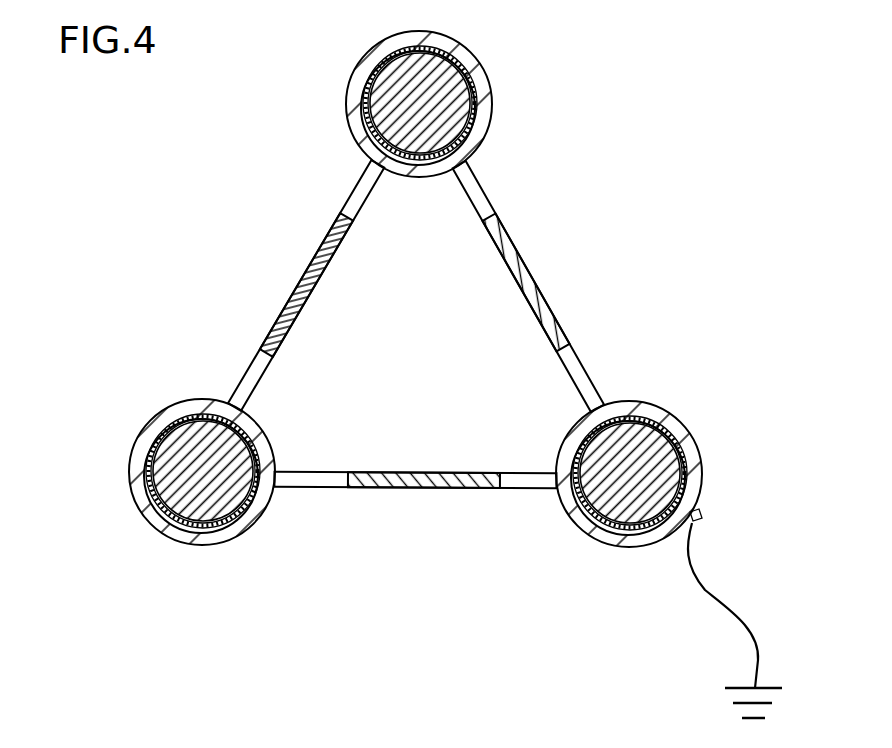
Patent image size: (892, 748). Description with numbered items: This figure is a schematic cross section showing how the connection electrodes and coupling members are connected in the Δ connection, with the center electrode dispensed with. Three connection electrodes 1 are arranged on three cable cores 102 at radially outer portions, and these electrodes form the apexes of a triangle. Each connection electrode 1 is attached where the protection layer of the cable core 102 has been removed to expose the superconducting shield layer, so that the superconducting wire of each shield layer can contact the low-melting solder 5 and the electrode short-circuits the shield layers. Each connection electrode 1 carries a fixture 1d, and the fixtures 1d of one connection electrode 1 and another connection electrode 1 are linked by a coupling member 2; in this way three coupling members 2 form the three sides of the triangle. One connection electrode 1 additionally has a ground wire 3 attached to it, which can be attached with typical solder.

The connection electrode 1 is at (330, 122).
The fixture 1d is at (473, 182).
The coupling member 2 is at (348, 233).
The cable core 102 is at (470, 100).
The low-melting solder 5 is at (470, 135).
The ground wire 3 is at (710, 590).